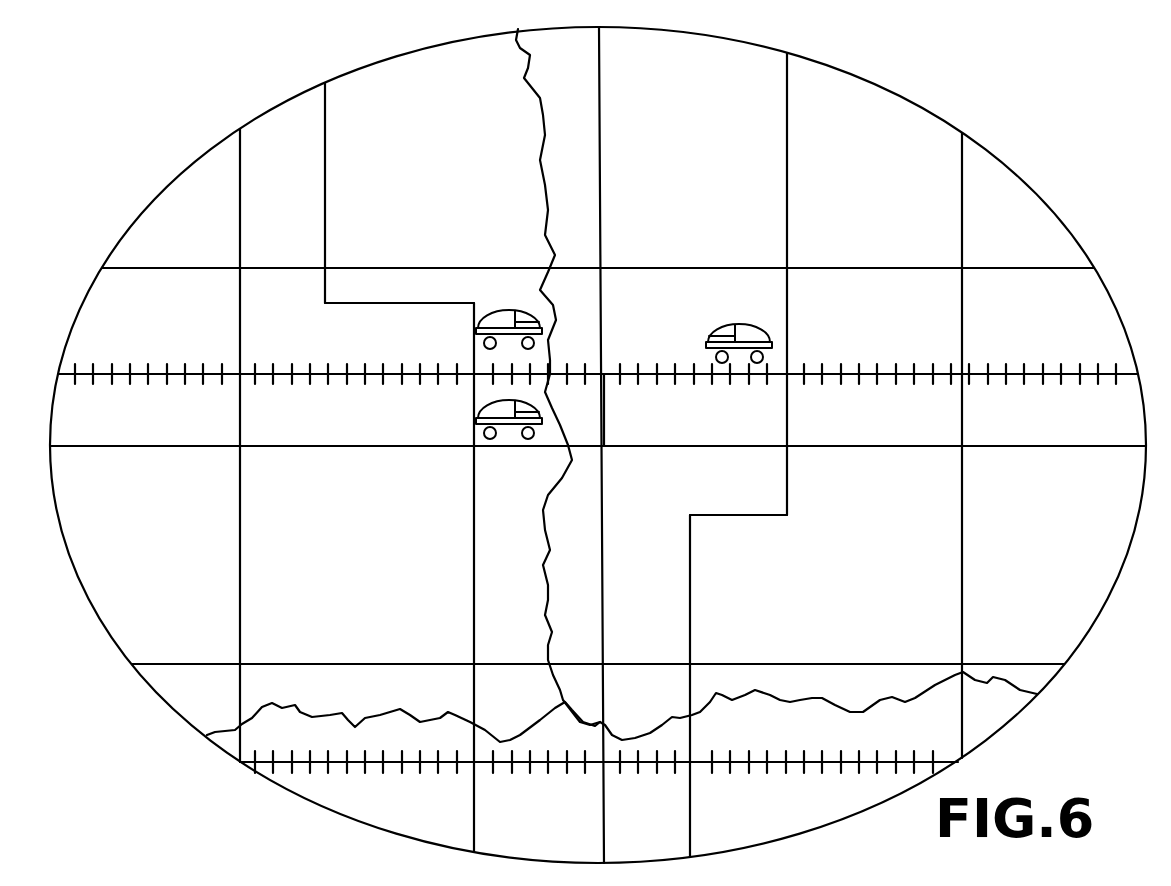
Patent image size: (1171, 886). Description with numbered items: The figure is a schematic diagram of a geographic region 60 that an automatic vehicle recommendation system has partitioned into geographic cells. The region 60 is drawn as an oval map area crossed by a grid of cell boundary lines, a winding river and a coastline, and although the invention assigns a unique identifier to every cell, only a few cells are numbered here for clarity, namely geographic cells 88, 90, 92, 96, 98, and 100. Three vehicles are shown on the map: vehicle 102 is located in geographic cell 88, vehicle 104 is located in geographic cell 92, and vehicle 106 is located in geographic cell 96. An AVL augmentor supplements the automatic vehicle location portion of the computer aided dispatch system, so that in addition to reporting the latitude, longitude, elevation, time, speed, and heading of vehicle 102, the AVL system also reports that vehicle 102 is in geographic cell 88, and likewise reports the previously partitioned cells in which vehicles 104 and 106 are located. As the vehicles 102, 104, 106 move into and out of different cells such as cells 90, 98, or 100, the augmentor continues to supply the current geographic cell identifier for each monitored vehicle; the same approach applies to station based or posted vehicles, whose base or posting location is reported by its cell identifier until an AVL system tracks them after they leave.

The partitioned geographic region 60 is at (598, 445).
The geographic cell 88 is at (523, 301).
The geographic cell 90 is at (590, 300).
The geographic cell 92 is at (770, 310).
The geographic cell 96 is at (494, 393).
The geographic cell 98 is at (577, 407).
The geographic cell 100 is at (767, 423).
The vehicle 102 is at (480, 323).
The vehicle 104 is at (768, 330).
The vehicle 106 is at (485, 448).